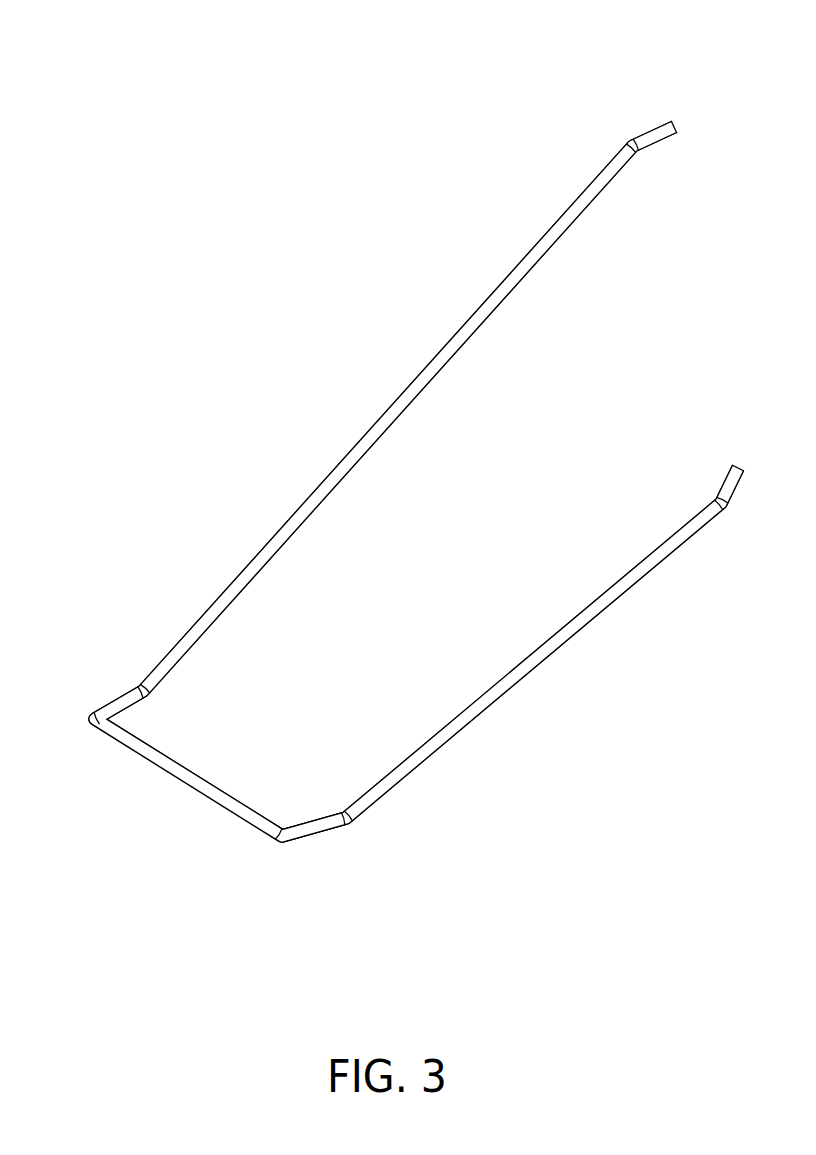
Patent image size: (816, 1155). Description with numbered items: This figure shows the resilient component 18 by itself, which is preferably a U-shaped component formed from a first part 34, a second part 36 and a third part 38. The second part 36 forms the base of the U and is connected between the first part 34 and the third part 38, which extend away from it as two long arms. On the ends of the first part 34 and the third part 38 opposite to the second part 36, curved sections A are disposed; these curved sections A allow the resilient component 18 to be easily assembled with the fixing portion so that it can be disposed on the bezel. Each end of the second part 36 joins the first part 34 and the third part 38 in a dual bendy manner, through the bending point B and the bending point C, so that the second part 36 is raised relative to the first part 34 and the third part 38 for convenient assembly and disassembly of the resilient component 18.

The resilient component 18 is at (181, 128).
The first part 34 is at (136, 652).
The second part 36 is at (273, 853).
The third part 38 is at (780, 497).
The curved sections A is at (650, 130).
The bending point B is at (94, 716).
The bending point C is at (136, 685).